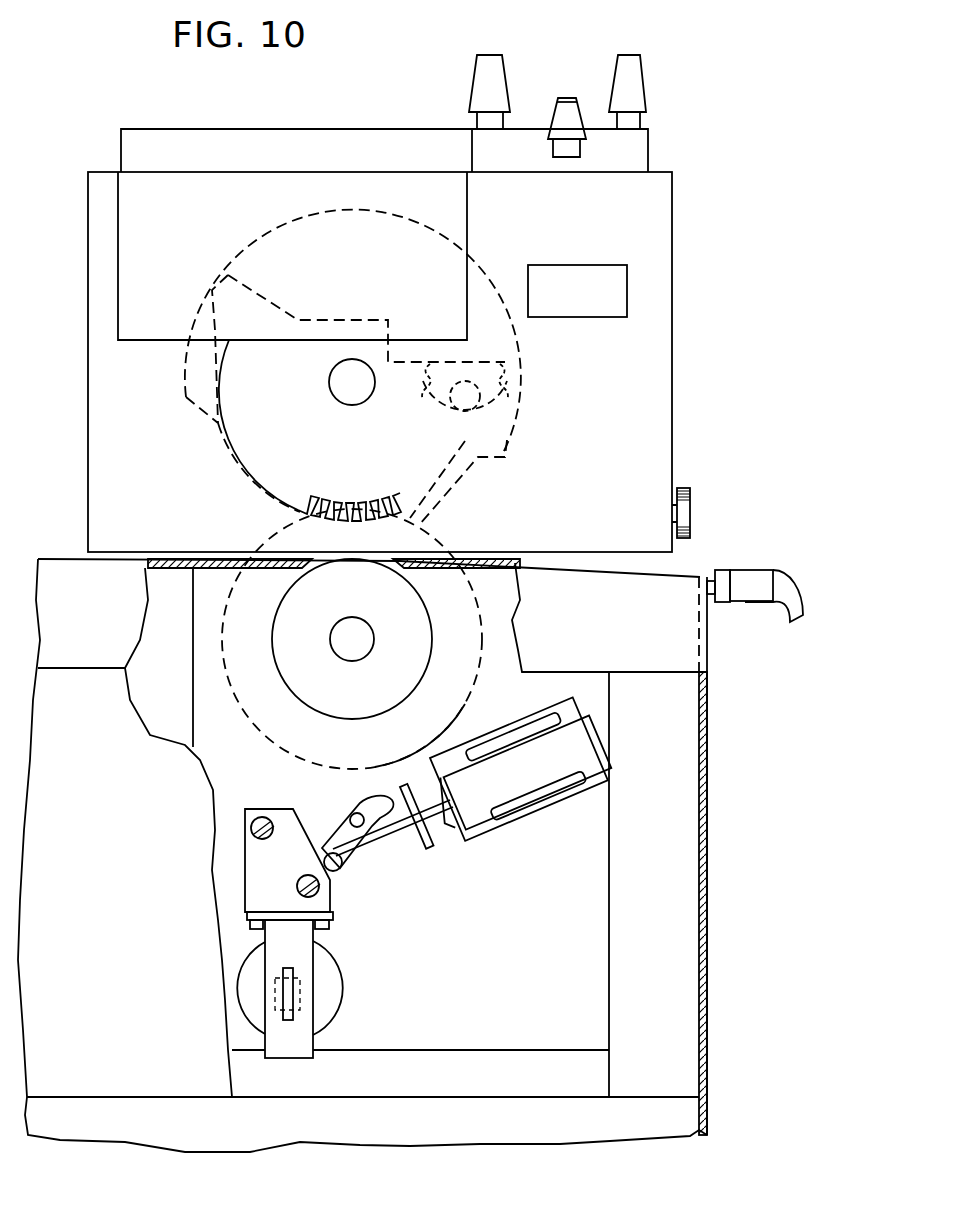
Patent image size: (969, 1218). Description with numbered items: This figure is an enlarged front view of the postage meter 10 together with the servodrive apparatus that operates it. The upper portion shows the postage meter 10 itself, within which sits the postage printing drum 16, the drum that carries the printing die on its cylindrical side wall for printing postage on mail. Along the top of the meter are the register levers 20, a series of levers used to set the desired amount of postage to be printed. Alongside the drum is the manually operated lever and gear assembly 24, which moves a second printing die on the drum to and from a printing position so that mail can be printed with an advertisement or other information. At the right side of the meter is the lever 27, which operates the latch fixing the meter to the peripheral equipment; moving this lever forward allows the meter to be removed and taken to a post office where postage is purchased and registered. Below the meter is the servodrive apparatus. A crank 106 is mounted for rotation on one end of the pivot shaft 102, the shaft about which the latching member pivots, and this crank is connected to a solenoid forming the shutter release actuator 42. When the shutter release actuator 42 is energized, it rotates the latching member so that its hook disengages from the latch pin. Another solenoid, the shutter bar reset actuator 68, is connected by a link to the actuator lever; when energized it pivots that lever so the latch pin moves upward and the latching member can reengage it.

The postage meter 10 is at (698, 410).
The postage printing drum 16 is at (195, 372).
The register levers 20 is at (621, 63).
The manually operated lever and gear assembly 24 is at (245, 433).
The lever 27 is at (740, 580).
The shutter release actuator 42 is at (598, 752).
The shutter bar reset actuator 68 is at (305, 1027).
The pivot shaft 102 is at (360, 808).
The crank 106 is at (372, 795).